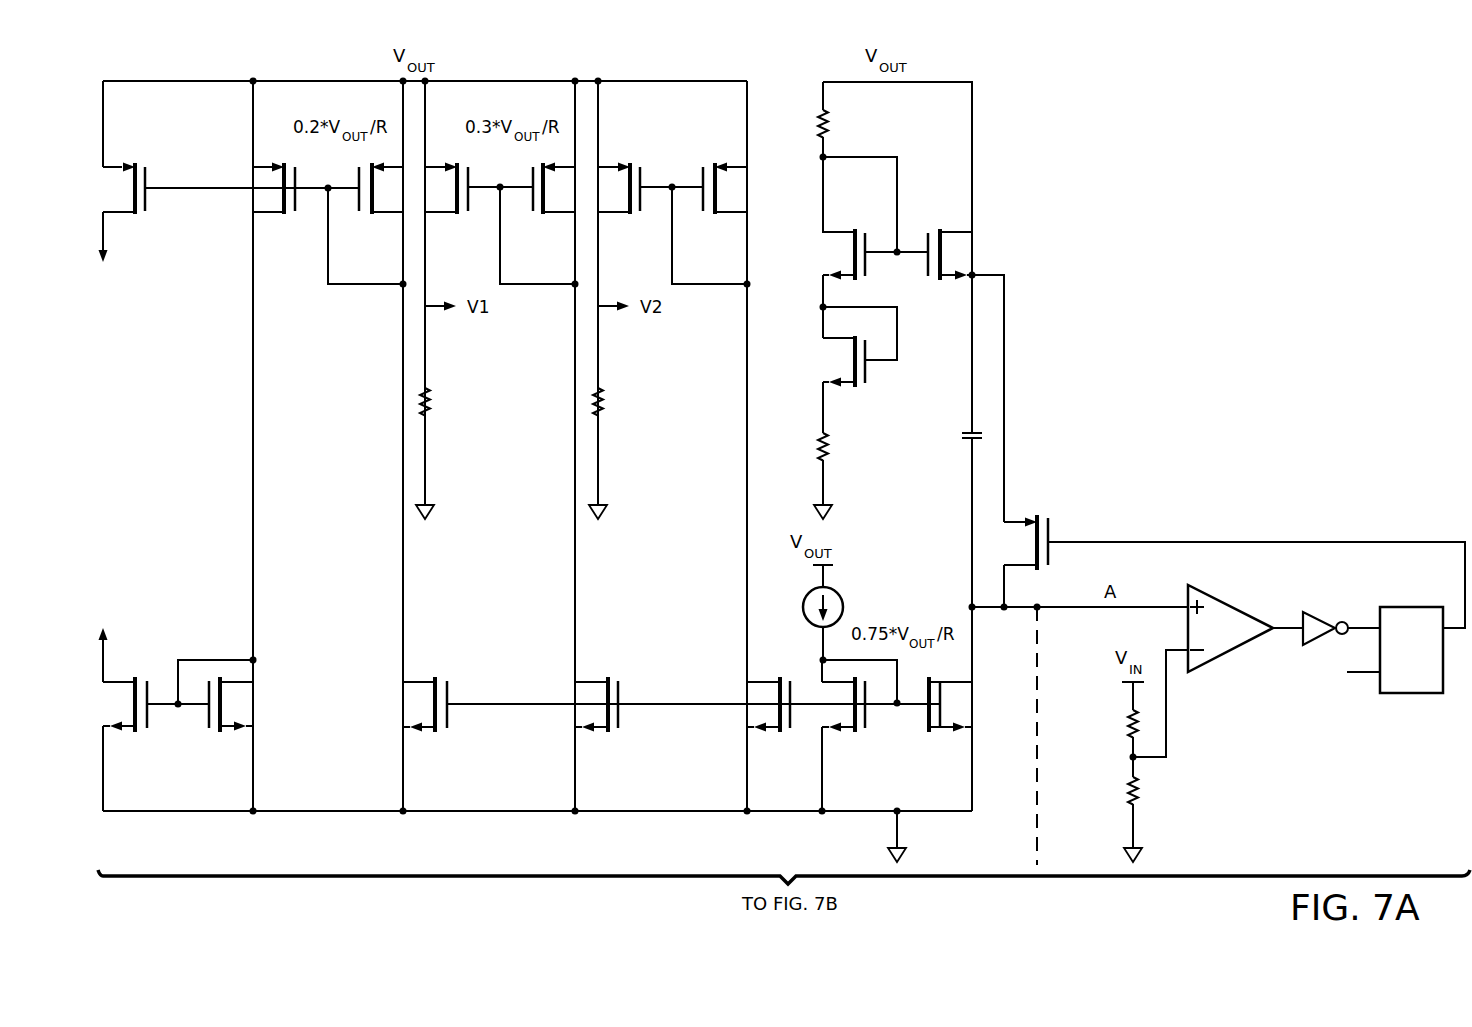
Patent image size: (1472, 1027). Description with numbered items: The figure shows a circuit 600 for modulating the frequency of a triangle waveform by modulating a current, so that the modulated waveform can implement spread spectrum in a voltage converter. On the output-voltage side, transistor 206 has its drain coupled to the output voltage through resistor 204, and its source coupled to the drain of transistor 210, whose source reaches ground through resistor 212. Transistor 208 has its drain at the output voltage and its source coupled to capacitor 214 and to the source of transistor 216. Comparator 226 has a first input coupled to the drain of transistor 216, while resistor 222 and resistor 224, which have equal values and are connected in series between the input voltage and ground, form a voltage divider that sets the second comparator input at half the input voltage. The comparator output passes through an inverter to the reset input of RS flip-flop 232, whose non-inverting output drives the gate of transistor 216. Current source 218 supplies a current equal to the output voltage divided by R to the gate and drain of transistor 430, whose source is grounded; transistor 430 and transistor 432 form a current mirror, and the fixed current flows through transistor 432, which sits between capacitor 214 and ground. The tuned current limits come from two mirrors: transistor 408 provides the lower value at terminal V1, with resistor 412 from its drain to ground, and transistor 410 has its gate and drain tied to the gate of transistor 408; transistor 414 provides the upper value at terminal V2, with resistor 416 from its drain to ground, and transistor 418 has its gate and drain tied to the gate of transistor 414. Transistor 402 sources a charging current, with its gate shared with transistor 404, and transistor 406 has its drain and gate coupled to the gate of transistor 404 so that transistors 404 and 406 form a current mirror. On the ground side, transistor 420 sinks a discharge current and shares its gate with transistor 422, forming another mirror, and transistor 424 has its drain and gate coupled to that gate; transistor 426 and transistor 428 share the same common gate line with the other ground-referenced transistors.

The circuit 600 is at (1185, 172).
The resistor 204 is at (830, 124).
The transistor 206 is at (867, 243).
The transistor 208 is at (928, 270).
The transistor 210 is at (867, 372).
The resistor 212 is at (830, 448).
The capacitor 214 is at (962, 433).
The transistor 216 is at (1050, 530).
The current source 218 is at (845, 603).
The resistor 222 is at (1128, 722).
The resistor 224 is at (1128, 787).
The comparator 226 is at (1228, 654).
The RS flip-flop 232 is at (1412, 694).
The transistor 402 is at (150, 206).
The transistor 404 is at (300, 206).
The transistor 406 is at (355, 206).
The transistor 408 is at (473, 206).
The transistor 410 is at (528, 206).
The resistor 412 is at (432, 400).
The transistor 414 is at (645, 206).
The resistor 416 is at (604, 400).
The transistor 418 is at (698, 206).
The transistor 420 is at (150, 694).
The transistor 422 is at (210, 716).
The transistor 424 is at (448, 716).
The transistor 426 is at (621, 716).
The transistor 428 is at (793, 716).
The transistor 430 is at (868, 716).
The transistor 432 is at (928, 716).